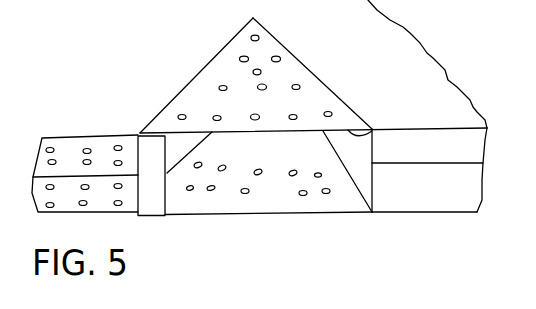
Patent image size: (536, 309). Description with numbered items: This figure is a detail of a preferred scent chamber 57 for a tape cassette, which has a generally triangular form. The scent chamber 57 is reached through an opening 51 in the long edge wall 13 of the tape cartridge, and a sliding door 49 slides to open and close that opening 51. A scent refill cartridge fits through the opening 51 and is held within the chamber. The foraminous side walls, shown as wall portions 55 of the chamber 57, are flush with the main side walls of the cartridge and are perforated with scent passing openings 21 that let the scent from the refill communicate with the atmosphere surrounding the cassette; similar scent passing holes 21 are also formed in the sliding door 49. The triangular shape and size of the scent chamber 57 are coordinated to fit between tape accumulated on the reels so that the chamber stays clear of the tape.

The long edge wall 13 is at (450, 190).
The scent passing openings 21 is at (272, 58).
The sliding door 49 is at (105, 133).
The opening 51 is at (372, 129).
The wall portions 55 is at (208, 77).
The scent chamber 57 is at (328, 218).